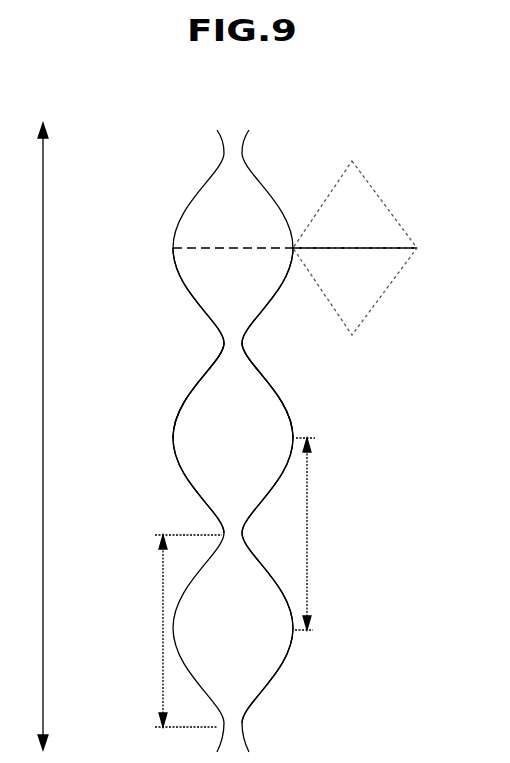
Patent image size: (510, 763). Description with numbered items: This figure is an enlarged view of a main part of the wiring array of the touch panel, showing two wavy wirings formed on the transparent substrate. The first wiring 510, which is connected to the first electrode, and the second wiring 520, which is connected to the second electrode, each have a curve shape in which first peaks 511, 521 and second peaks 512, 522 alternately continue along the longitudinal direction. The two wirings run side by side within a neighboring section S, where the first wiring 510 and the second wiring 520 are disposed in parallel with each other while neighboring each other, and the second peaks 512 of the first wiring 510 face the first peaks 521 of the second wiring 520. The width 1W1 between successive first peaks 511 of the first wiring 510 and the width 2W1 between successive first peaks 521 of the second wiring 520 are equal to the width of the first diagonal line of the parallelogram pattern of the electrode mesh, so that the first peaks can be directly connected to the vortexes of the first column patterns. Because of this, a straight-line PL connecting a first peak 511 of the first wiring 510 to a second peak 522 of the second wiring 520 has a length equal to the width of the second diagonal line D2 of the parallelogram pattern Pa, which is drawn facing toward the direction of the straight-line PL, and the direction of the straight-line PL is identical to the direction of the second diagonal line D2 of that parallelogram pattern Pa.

The first wiring 510 is at (267, 187).
The first peaks 511 is at (296, 438).
The second peaks 512 is at (244, 343).
The second wiring 520 is at (197, 185).
The first peaks 521 is at (222, 343).
The second peaks 522 is at (173, 440).
The straight-line PL is at (229, 248).
The parallelogram pattern Pa is at (377, 188).
The second diagonal line D2 is at (335, 248).
The neighboring section S is at (31, 436).
The width between first peaks of first wiring 1W1 is at (331, 534).
The width between first peaks of second wiring 2W1 is at (159, 631).